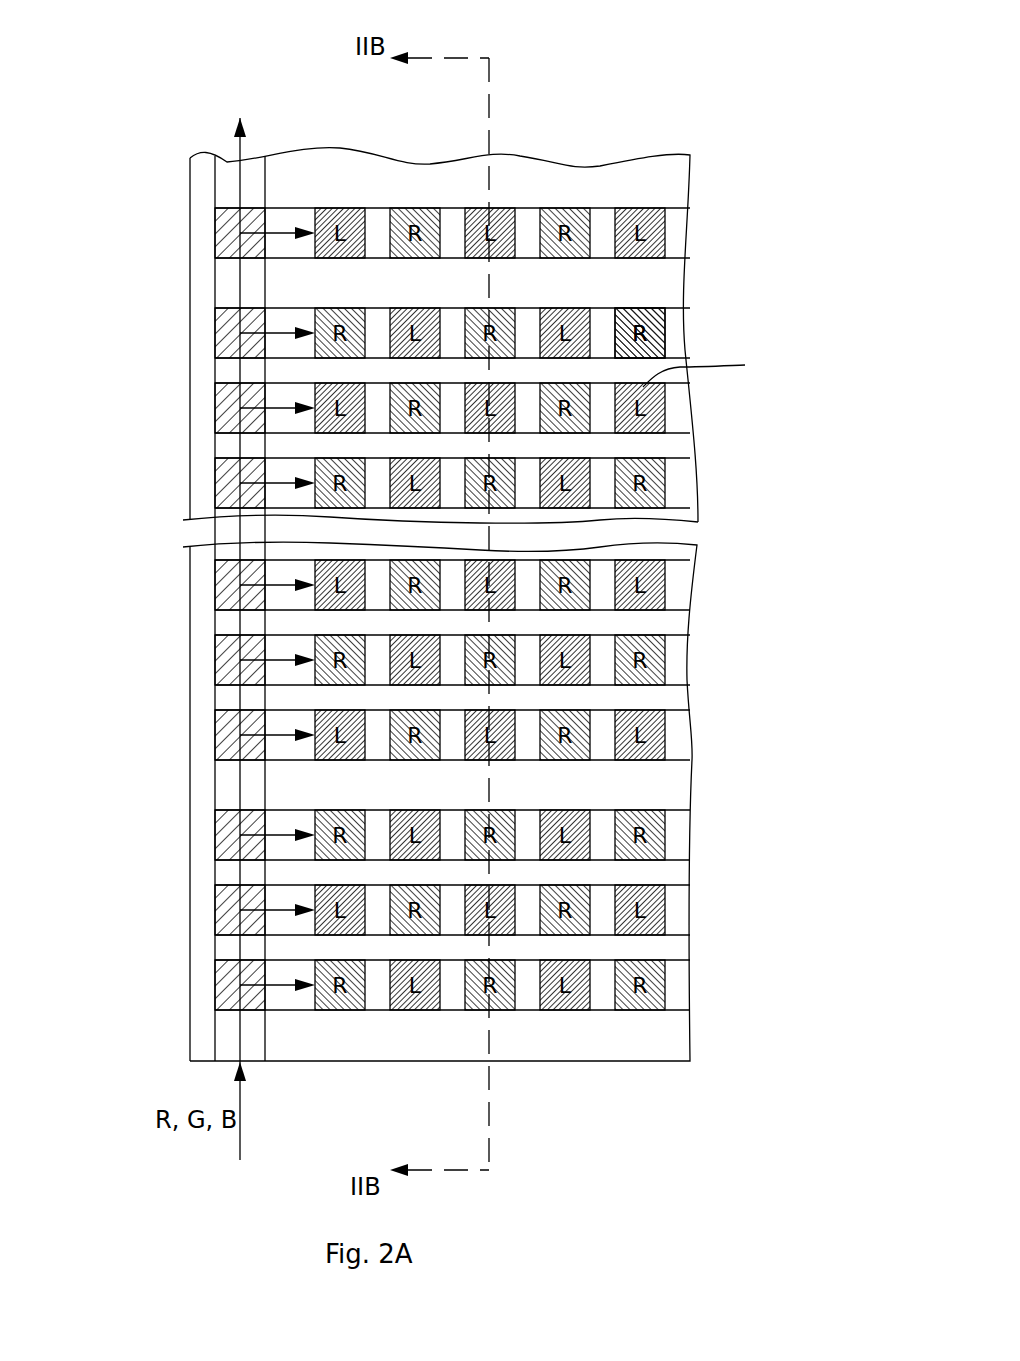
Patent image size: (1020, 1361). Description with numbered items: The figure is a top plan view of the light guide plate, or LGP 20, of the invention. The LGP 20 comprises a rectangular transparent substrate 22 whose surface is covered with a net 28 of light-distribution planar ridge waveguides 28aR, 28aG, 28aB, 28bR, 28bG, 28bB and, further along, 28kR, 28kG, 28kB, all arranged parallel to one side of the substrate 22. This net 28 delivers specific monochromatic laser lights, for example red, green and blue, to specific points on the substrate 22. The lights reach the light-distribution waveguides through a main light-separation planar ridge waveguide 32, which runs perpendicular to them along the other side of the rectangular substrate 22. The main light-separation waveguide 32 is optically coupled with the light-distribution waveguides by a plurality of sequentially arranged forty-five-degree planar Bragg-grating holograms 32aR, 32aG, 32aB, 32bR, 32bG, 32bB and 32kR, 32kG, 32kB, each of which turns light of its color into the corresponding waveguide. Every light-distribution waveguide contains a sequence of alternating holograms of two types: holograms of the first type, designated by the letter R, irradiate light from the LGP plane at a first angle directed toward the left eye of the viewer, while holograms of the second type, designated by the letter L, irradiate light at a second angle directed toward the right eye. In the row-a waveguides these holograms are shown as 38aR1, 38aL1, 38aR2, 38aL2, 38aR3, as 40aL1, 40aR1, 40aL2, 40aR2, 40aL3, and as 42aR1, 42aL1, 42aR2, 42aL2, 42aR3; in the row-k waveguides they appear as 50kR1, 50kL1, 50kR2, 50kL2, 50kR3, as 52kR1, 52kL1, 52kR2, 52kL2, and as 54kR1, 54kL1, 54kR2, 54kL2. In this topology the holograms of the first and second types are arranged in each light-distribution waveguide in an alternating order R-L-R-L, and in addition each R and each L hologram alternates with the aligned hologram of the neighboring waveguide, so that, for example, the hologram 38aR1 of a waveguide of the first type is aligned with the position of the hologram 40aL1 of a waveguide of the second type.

The LGP 20 is at (173, 140).
The rectangular transparent substrate 22 is at (188, 177).
The net of light-distribution planar ridge waveguides 28 is at (647, 305).
The main light-separation planar ridge waveguide 32 is at (223, 1040).
The light-distribution planar ridge waveguide 28kB is at (680, 340).
The light-distribution planar ridge waveguide 28kG is at (687, 417).
The light-distribution planar ridge waveguide 28kR is at (687, 488).
The light-distribution planar ridge waveguide 28bB is at (690, 588).
The light-distribution planar ridge waveguide 28bG is at (687, 665).
The light-distribution planar ridge waveguide 28bR is at (683, 740).
The light-distribution planar ridge waveguide 28aB is at (683, 838).
The light-distribution planar ridge waveguide 28aG is at (683, 915).
The light-distribution planar ridge waveguide 28aR is at (680, 992).
The 45° planar Bragg-grating hologram 32kB is at (222, 335).
The 45° planar Bragg-grating hologram 32kG is at (225, 413).
The 45° planar Bragg-grating hologram 32kR is at (225, 488).
The 45° planar Bragg-grating hologram 32bB is at (225, 590).
The 45° planar Bragg-grating hologram 32bG is at (225, 665).
The 45° planar Bragg-grating hologram 32bR is at (225, 740).
The 45° planar Bragg-grating hologram 32aB is at (225, 838).
The 45° planar Bragg-grating hologram 32aG is at (225, 913).
The 45° planar Bragg-grating hologram 32aR is at (223, 997).
The hologram of the first type 54kR1 is at (323, 310).
The hologram of the first type 54kR2 is at (467, 310).
The hologram of the second type 54kL1 is at (423, 310).
The hologram of the second type 54kL2 is at (568, 310).
The hologram of the first type 52kR1 is at (390, 385).
The hologram of the first type 52kR2 is at (567, 385).
The hologram of the second type 52kL1 is at (317, 385).
The hologram of the second type 52kL2 is at (503, 385).
The hologram of the first type 50kR1 is at (330, 502).
The hologram of the first type 50kR2 is at (487, 510).
The hologram of the first type 50kR3 is at (660, 473).
The hologram of the second type 50kL1 is at (407, 475).
The hologram of the second type 50kL2 is at (570, 460).
The hologram of the first type 42aR1 is at (332, 812).
The hologram of the first type 42aR2 is at (482, 812).
The hologram of the first type 42aR3 is at (662, 850).
The hologram of the second type 42aL1 is at (415, 860).
The hologram of the second type 42aL2 is at (568, 810).
The hologram of the first type 40aR1 is at (413, 930).
The hologram of the first type 40aR2 is at (547, 930).
The hologram of the second type 40aL1 is at (317, 935).
The hologram of the second type 40aL2 is at (465, 930).
The hologram of the second type 40aL3 is at (623, 930).
The hologram of the first type 38aR1 is at (353, 1003).
The hologram of the first type 38aR2 is at (505, 1003).
The hologram of the first type 38aR3 is at (653, 1003).
The hologram of the second type 38aL1 is at (427, 1003).
The hologram of the second type 38aL2 is at (580, 1005).